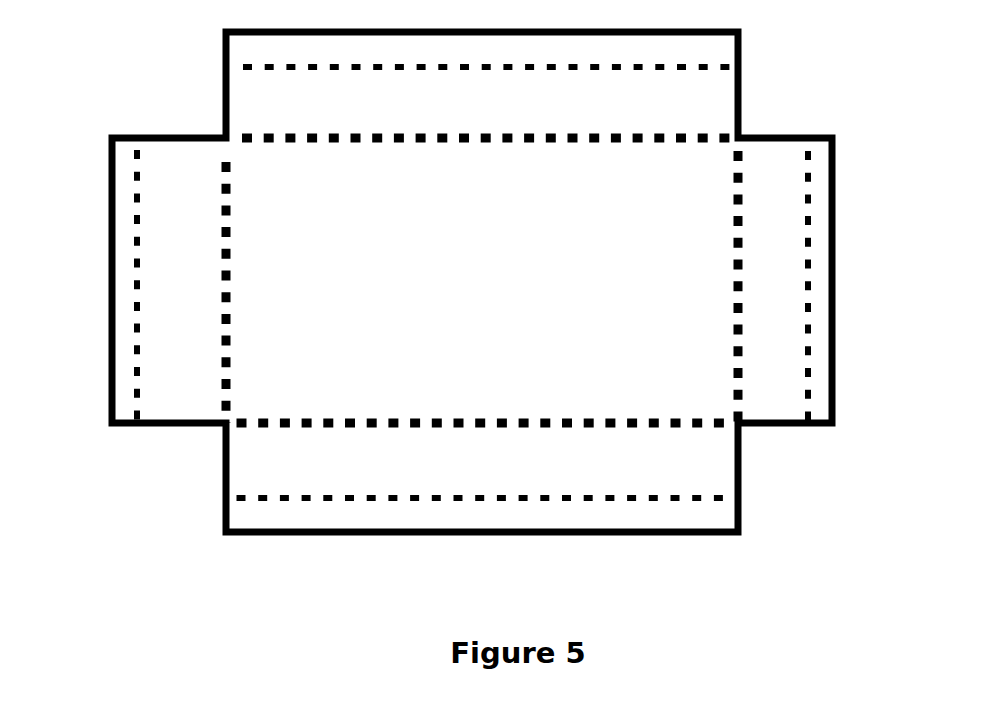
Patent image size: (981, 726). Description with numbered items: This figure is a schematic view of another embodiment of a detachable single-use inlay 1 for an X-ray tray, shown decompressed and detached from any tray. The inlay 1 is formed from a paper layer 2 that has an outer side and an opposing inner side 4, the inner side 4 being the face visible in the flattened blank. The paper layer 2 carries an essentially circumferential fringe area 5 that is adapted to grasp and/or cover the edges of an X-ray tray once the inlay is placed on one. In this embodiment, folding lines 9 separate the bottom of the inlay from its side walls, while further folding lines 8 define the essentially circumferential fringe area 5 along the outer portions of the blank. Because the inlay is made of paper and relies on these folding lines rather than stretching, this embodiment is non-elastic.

The detachable single-use inlay 1 is at (797, 497).
The paper layer 2 is at (342, 315).
The inner side 4 is at (310, 215).
The essentially circumferential fringe area 5 is at (688, 48).
The folding lines 8 is at (807, 373).
The folding lines 9 is at (227, 210).